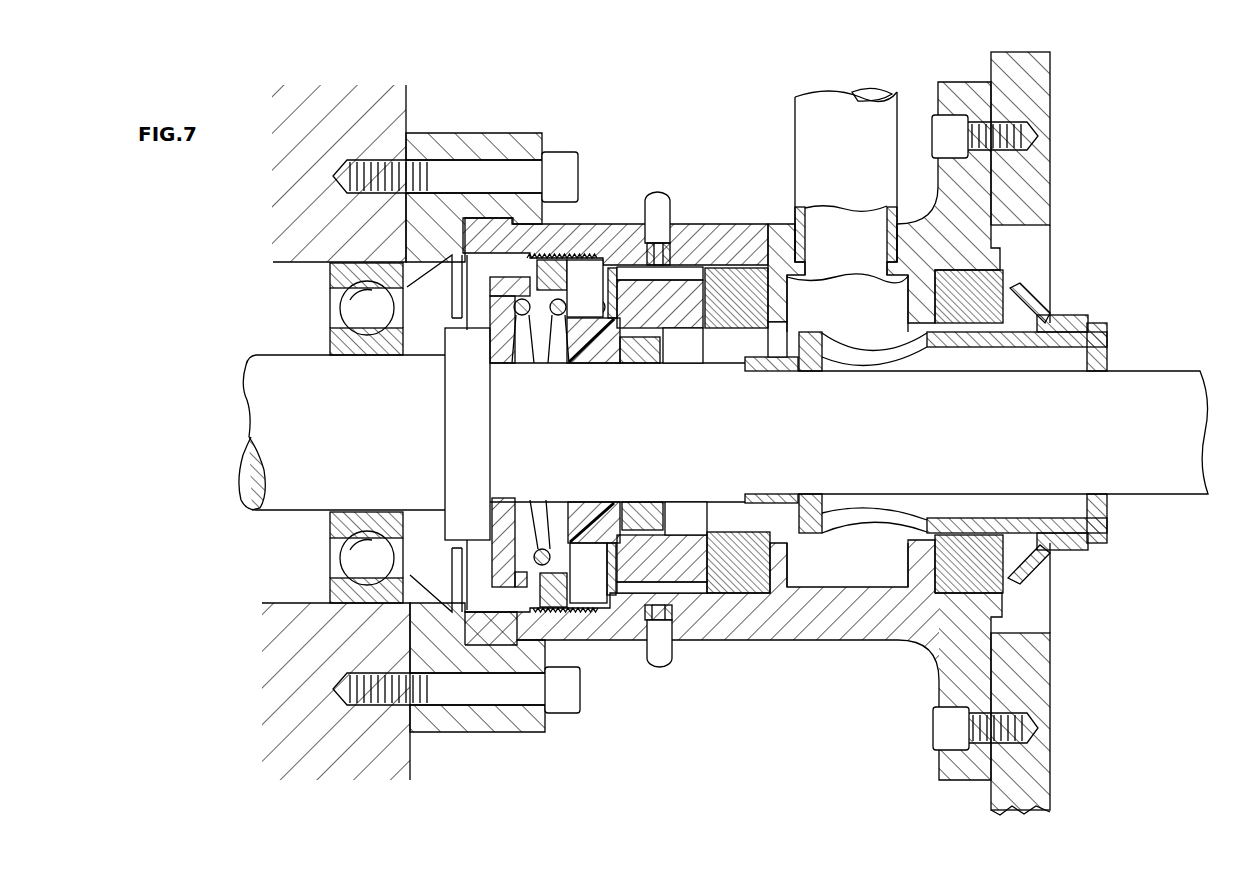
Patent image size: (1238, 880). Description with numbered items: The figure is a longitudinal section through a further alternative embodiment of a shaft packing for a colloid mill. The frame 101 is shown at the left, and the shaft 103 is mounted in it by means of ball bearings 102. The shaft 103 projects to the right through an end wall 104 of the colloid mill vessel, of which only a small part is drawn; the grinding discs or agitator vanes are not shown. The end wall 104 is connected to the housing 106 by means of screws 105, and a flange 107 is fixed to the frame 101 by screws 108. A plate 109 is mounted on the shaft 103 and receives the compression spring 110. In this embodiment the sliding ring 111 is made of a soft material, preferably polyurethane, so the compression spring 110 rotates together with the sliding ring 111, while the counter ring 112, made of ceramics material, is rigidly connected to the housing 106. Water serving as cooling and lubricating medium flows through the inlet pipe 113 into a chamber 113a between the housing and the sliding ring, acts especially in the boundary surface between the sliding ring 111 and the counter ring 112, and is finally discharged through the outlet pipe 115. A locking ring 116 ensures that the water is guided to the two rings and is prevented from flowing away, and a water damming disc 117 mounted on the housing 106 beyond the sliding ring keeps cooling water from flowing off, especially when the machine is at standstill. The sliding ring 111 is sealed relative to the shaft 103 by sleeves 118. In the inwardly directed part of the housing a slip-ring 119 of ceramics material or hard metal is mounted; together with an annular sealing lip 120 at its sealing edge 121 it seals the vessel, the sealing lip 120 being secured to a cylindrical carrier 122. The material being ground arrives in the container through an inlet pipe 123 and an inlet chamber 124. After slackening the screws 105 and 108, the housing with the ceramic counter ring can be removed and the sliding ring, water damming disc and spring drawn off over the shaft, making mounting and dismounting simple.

The frame 101 is at (305, 219).
The ball bearings 102 is at (340, 308).
The shaft 103 is at (808, 446).
The end wall 104 is at (1025, 82).
The screws 105 is at (1013, 137).
The housing 106 is at (787, 613).
The flange 107 is at (478, 143).
The screws 108 is at (566, 155).
The plate 109 is at (500, 342).
The compression spring 110 is at (541, 549).
The sliding ring 111 is at (600, 520).
The counter ring 112 is at (735, 287).
The inlet pipe 113 is at (655, 162).
The chamber 113a is at (676, 276).
The outlet pipe 115 is at (660, 642).
The locking ring 116 is at (640, 620).
The water damming disc 117 is at (578, 612).
The sleeves 118 is at (620, 366).
The slip-ring 119 is at (988, 274).
The annular sealing lip 120 is at (1065, 313).
The sealing edge 121 is at (1020, 300).
The cylindrical carrier 122 is at (1085, 345).
The inlet pipe 123 is at (815, 123).
The inlet chamber 124 is at (860, 565).